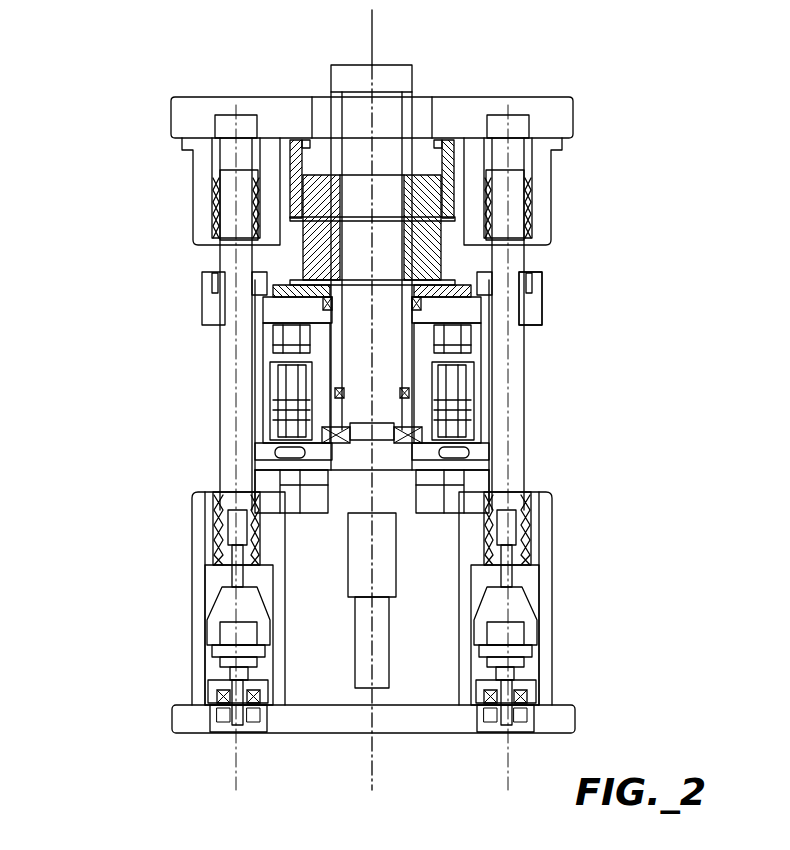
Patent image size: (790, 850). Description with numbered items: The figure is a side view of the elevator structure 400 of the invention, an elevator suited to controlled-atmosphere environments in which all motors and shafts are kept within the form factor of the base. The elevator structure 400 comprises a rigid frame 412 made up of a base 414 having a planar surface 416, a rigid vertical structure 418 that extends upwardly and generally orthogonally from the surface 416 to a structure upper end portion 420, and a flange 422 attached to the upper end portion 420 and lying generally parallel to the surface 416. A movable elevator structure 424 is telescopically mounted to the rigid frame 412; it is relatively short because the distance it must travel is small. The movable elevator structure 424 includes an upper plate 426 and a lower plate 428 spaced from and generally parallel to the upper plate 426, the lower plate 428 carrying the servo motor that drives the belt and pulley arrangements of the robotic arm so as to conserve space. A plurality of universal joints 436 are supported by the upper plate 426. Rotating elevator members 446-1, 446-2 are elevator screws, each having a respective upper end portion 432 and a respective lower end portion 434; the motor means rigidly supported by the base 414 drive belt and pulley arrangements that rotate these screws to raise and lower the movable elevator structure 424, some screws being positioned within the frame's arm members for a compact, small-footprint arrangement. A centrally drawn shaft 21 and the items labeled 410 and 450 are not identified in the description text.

The spindle shaft 21 is at (372, 30).
The elevator structure 400 is at (563, 293).
The guide column 410 is at (503, 452).
The rigid frame 412 is at (533, 477).
The base 414 is at (582, 712).
The surface 416 is at (330, 700).
The rigid vertical structure 418 is at (208, 403).
The structure upper end portion 420 is at (152, 217).
The flange 422 is at (565, 108).
The movable elevator structure 424 is at (262, 358).
The upper plate 426 is at (543, 308).
The lower plate 428 is at (352, 462).
The upper end portion 432 is at (517, 178).
The lower end portion 434 is at (528, 578).
The universal joints 436 is at (203, 280).
The rotating elevator member 446-1 is at (528, 355).
The rotating elevator member 446-2 is at (222, 370).
The spindle sleeve collar 450 is at (455, 235).